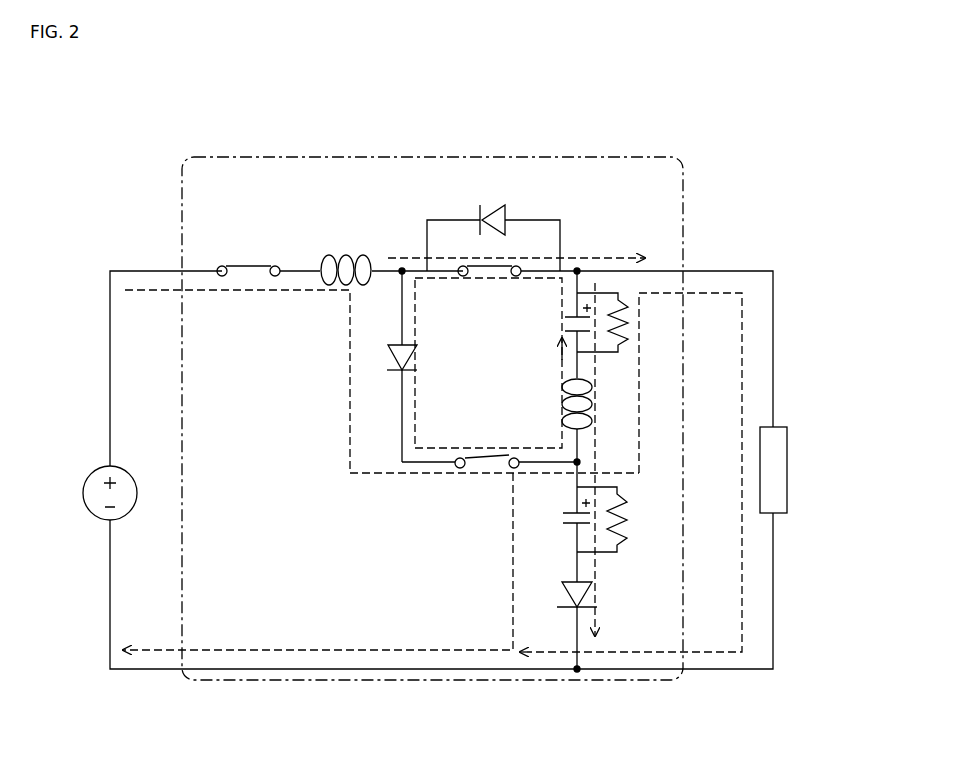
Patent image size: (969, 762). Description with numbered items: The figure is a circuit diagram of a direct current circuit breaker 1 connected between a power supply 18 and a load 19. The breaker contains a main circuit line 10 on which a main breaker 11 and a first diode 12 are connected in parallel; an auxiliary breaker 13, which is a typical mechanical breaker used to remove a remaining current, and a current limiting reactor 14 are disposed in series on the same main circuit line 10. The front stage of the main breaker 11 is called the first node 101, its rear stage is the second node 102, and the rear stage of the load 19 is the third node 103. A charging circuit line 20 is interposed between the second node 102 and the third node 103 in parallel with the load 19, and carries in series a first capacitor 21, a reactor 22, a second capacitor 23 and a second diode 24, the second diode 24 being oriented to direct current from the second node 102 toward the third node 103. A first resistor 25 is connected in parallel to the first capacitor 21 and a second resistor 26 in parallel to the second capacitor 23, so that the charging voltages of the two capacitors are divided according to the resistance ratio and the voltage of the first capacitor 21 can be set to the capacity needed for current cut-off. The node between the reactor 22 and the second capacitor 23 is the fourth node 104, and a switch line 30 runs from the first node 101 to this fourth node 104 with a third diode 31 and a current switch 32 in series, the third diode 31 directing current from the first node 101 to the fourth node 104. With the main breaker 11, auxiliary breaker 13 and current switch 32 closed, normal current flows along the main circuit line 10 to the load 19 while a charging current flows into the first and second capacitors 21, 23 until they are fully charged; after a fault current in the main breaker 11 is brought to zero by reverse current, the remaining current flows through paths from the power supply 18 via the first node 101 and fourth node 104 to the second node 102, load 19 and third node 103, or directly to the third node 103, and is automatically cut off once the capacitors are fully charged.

The direct current circuit breaker 1 is at (181, 185).
The main circuit line 10 is at (775, 323).
The main breaker 11 is at (478, 278).
The first diode 12 is at (496, 214).
The auxiliary breaker 13 is at (247, 265).
The current limiting reactor 14 is at (348, 260).
The power supply 18 is at (100, 470).
The load 19 is at (783, 427).
The charging circuit line 20 is at (578, 650).
The first capacitor 21 is at (568, 323).
The reactor 22 is at (592, 409).
The second capacitor 23 is at (567, 515).
The second diode 24 is at (562, 582).
The first resistor 25 is at (628, 328).
The second resistor 26 is at (628, 520).
The switch line 30 is at (400, 448).
The third diode 31 is at (394, 349).
The current switch 32 is at (490, 467).
The first node 101 is at (401, 266).
The second node 102 is at (578, 266).
The third node 103 is at (578, 672).
The fourth node 104 is at (580, 465).